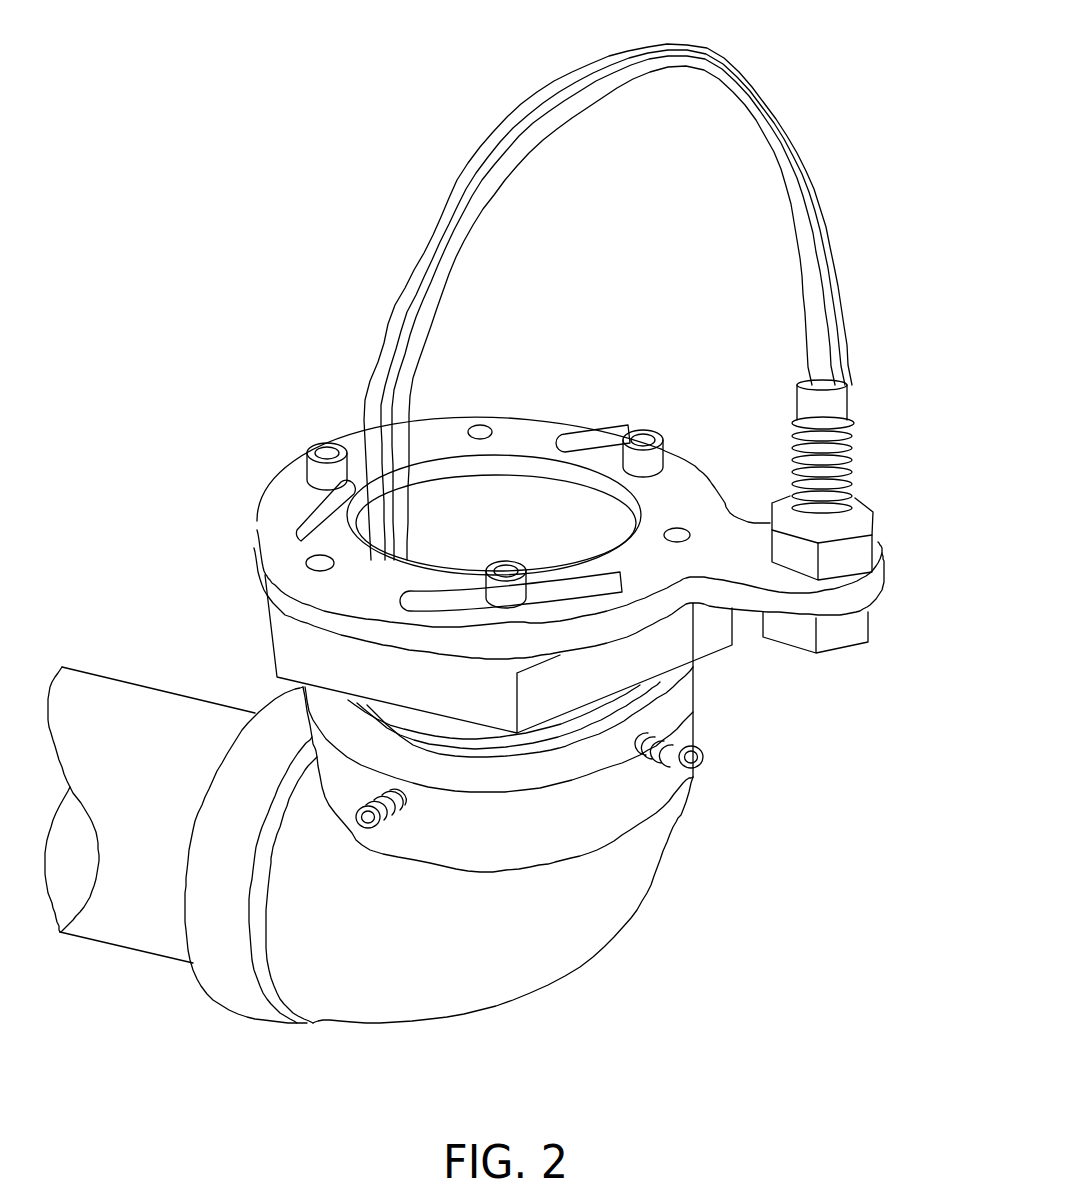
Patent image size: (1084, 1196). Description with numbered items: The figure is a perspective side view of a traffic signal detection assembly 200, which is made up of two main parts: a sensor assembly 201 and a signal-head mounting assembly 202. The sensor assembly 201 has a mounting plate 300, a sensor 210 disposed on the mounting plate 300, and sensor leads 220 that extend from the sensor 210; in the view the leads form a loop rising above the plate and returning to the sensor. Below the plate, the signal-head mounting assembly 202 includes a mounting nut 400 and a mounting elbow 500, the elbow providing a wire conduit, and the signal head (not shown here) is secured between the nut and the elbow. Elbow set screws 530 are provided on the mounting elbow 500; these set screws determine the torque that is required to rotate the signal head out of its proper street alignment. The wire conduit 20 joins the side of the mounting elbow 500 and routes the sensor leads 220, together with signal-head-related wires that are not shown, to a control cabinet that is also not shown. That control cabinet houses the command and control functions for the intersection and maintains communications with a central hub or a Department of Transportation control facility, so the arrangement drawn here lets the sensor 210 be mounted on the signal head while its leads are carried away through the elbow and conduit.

The traffic signal detection assembly 200 is at (473, 92).
The sensor assembly 201 is at (905, 623).
The signal-head mounting assembly 202 is at (776, 845).
The wire conduit 20 is at (83, 688).
The sensor 210 is at (866, 510).
The sensor leads 220 is at (712, 58).
The mounting plate 300 is at (527, 427).
The mounting nut 400 is at (293, 652).
The mounting elbow 500 is at (610, 913).
The elbow set screws 530 is at (398, 820).